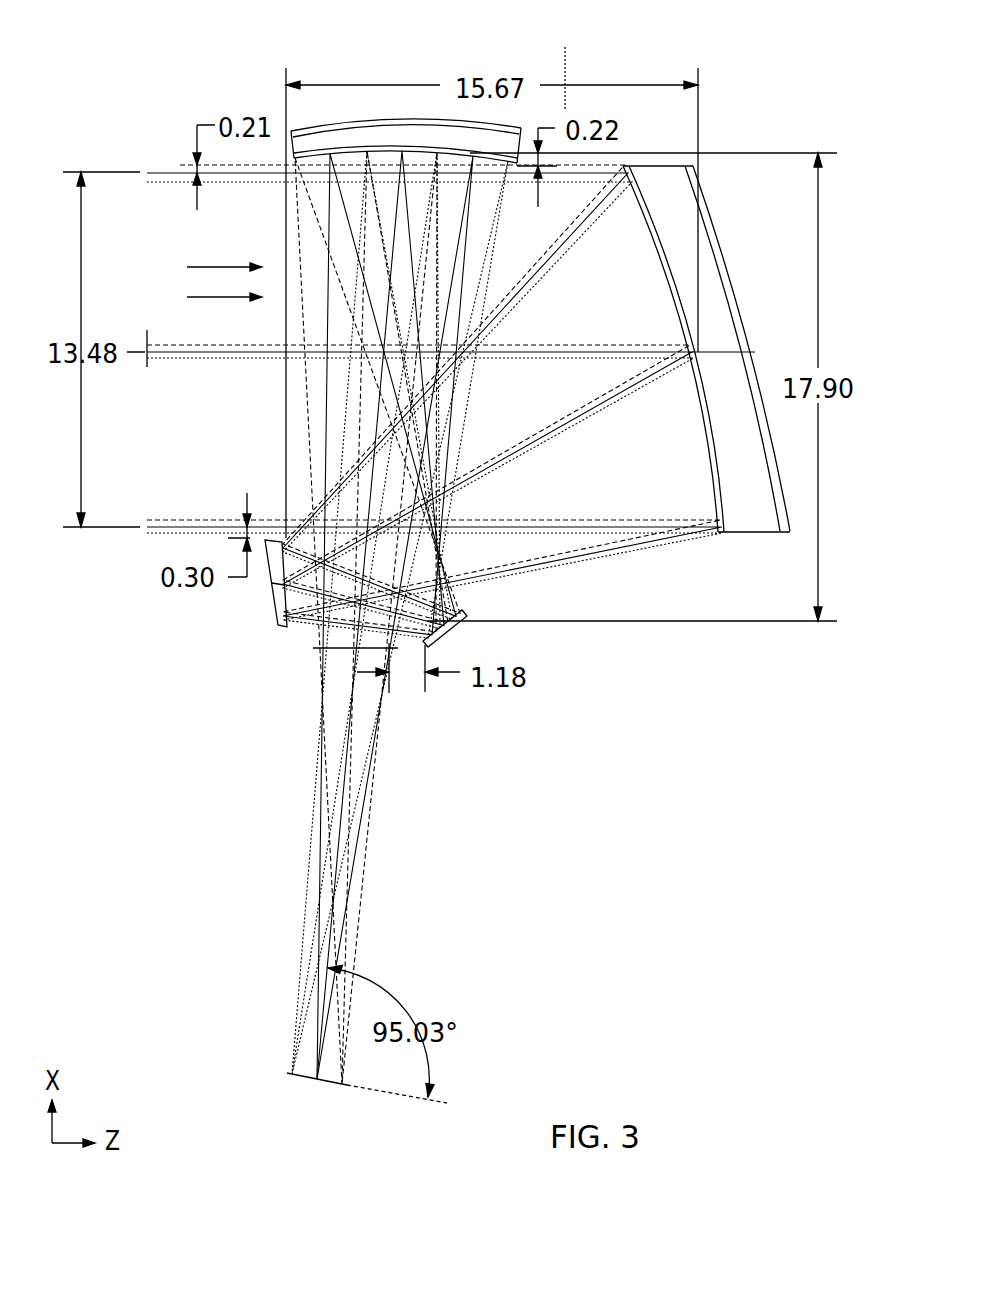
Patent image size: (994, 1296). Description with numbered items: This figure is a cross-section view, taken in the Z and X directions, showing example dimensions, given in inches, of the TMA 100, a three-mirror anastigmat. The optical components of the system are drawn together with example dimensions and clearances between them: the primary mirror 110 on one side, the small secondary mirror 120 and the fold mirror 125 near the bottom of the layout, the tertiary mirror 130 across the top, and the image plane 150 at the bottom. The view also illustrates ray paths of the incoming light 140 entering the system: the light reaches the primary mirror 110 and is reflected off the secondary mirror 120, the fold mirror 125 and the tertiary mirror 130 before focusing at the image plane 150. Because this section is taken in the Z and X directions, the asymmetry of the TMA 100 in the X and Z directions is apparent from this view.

The TMA 100 is at (768, 952).
The primary mirror 110 is at (732, 262).
The secondary mirror 120 is at (272, 605).
The fold mirror 125 is at (445, 630).
The tertiary mirror 130 is at (322, 130).
The incoming light 140 is at (173, 312).
The image plane 150 is at (327, 1082).